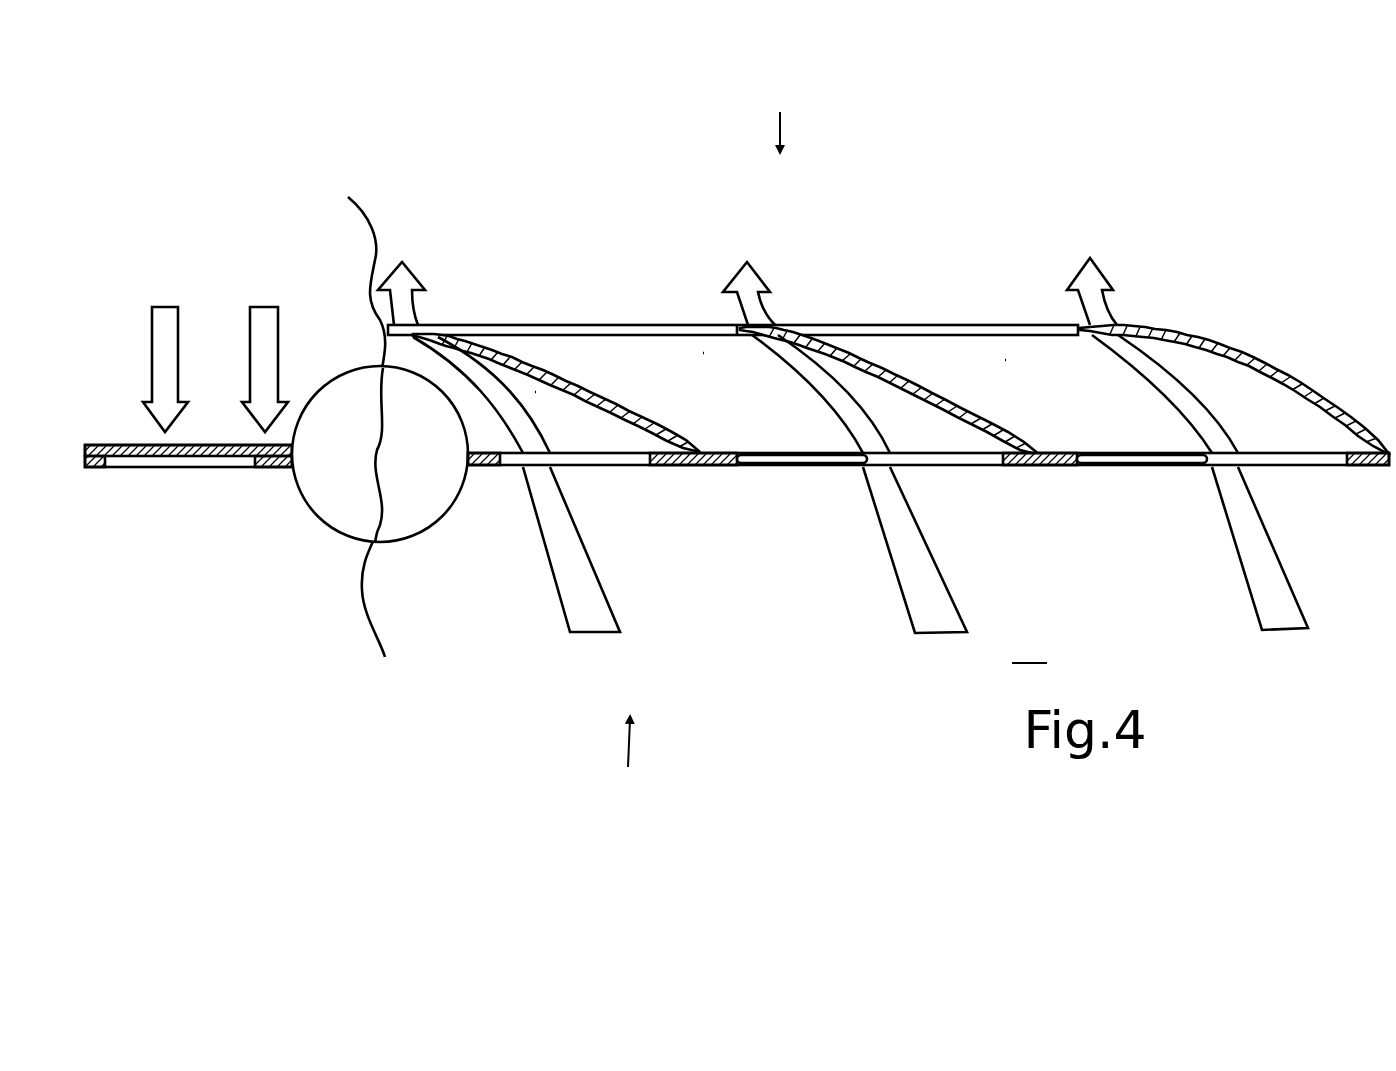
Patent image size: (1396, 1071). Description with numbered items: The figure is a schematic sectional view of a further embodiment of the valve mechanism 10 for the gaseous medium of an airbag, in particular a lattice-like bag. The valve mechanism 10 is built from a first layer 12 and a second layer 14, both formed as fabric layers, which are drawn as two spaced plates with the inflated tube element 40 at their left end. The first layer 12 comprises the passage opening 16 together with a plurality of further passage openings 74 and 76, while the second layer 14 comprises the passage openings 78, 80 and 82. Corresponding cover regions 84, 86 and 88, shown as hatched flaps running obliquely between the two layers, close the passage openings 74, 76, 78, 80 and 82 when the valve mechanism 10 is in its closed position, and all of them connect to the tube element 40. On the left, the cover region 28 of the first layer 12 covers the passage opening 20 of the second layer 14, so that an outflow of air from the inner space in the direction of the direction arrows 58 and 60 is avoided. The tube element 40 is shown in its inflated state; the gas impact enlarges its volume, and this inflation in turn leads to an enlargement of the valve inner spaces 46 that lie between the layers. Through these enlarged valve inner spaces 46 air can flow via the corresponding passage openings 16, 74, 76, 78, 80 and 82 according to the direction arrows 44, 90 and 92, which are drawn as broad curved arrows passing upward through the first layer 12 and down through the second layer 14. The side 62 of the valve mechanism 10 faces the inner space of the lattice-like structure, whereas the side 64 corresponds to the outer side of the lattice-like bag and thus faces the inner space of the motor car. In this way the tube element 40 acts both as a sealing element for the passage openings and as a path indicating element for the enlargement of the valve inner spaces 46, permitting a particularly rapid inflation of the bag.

The valve mechanism 10 is at (1030, 645).
The first layer 12 is at (733, 290).
The second layer 14 is at (928, 504).
The passage opening 16 is at (335, 362).
The passage opening 20 is at (188, 459).
The cover region 28 is at (208, 445).
The tube element 40 is at (425, 510).
The direction arrow 44 is at (595, 615).
The valve inner space 46 is at (535, 392).
The direction arrow 58 is at (165, 313).
The direction arrow 60 is at (265, 313).
The side 62 is at (783, 111).
The side 64 is at (628, 761).
The passage opening 74 is at (625, 330).
The passage opening 76 is at (895, 330).
The passage opening 78 is at (632, 467).
The passage opening 80 is at (790, 467).
The passage opening 82 is at (1143, 467).
The cover region 84 is at (655, 410).
The cover region 86 is at (975, 400).
The cover region 88 is at (1262, 370).
The direction arrow 90 is at (928, 617).
The direction arrow 92 is at (1278, 615).